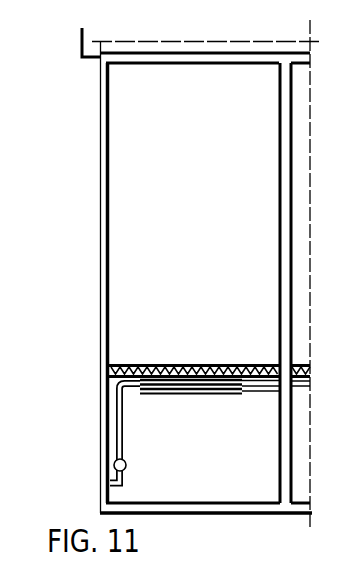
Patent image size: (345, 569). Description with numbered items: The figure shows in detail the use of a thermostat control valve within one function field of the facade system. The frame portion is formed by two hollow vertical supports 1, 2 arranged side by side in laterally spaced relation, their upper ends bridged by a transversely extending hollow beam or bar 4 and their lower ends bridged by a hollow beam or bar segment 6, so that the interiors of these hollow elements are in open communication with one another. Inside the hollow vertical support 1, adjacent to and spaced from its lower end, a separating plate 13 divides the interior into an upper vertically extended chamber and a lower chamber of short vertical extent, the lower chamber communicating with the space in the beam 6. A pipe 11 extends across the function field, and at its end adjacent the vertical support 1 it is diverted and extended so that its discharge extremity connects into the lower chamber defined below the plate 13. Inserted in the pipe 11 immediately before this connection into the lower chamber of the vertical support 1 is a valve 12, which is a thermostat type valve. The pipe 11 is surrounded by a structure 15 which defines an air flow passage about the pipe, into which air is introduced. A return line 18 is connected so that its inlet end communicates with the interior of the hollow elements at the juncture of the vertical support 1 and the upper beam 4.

The hollow vertical support 1 is at (100, 213).
The hollow vertical support 2 is at (284, 211).
The hollow structural element (beam or bar) 4 is at (195, 58).
The hollow beam or bar segment 6 is at (198, 505).
The pipe 11 is at (188, 374).
The valve 12 is at (125, 460).
The plate 13 is at (113, 467).
The structure 15 is at (261, 387).
The return line 18 is at (80, 36).